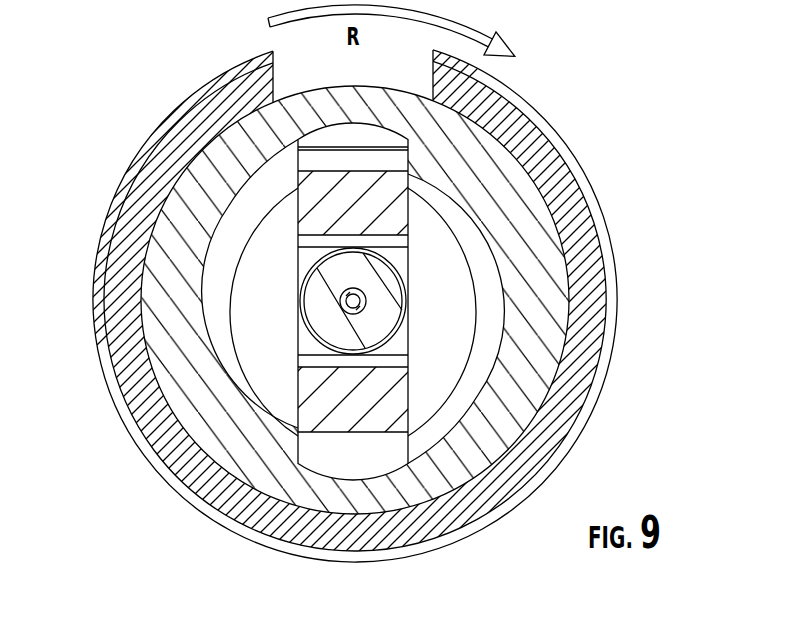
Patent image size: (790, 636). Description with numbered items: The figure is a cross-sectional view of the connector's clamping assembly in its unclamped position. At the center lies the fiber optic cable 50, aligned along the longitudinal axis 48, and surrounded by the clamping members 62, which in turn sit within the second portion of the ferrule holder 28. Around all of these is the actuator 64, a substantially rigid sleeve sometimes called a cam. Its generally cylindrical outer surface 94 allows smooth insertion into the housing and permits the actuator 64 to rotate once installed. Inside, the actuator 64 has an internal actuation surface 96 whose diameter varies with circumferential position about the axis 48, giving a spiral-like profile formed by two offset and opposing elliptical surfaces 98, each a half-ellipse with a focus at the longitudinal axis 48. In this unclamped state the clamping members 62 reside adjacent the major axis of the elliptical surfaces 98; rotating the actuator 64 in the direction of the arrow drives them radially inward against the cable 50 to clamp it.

The ferrule holder 28 is at (610, 277).
The longitudinal axis 48 is at (367, 299).
The fiber optic cable 50 is at (313, 312).
The clamping member 62 is at (325, 195).
The actuator 64 is at (195, 195).
The outer surface 94 is at (142, 347).
The internal actuation surface 96 is at (545, 352).
The elliptical surface 98 is at (205, 240).